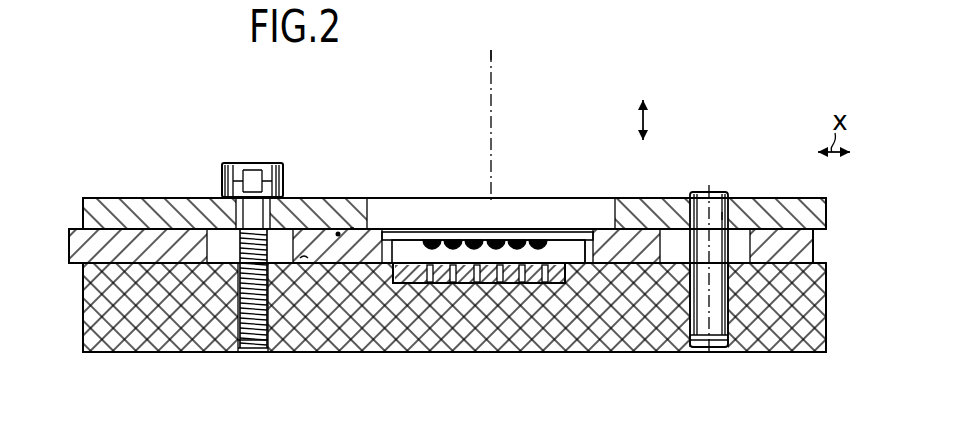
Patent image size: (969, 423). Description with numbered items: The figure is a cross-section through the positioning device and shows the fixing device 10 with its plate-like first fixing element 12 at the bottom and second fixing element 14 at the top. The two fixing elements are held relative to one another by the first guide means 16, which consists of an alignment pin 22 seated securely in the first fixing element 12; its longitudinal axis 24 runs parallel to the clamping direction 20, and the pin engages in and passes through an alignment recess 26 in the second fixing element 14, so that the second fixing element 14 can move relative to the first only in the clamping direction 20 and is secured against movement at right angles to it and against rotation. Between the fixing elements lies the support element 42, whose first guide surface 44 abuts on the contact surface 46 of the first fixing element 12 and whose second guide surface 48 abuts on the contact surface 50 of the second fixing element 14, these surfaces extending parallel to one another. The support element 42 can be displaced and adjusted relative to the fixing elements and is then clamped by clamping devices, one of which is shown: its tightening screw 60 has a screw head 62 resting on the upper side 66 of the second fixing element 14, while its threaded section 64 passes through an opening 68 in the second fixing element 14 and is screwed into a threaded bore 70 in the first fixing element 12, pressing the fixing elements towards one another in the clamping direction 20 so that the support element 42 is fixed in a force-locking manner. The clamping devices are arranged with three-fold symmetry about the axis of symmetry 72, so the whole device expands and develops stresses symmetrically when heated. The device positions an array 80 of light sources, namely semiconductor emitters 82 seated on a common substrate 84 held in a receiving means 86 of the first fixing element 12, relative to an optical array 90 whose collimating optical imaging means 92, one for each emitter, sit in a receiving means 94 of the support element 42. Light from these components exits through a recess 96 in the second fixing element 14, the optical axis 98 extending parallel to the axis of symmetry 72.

The fixing device 10 is at (837, 302).
The first fixing element 12 is at (783, 353).
The second fixing element 14 is at (777, 197).
The first guide means 16 is at (729, 190).
The clamping direction 20 is at (646, 118).
The alignment pin 22 is at (705, 341).
The longitudinal axis 24 is at (690, 300).
The alignment recess 26 is at (724, 216).
The support element 42 is at (105, 245).
The first guide surface 44 is at (345, 263).
The contact surface 46 is at (304, 258).
The second guide surface 48 is at (338, 232).
The contact surface 50 is at (350, 228).
The tightening screw 60 is at (280, 242).
The screw head 62 is at (250, 178).
The threaded section 64 is at (240, 307).
The upper side 66 is at (88, 198).
The opening 68 is at (240, 212).
The threaded bore 70 is at (247, 352).
The axis of symmetry 72 is at (491, 66).
The array of light sources 80 is at (460, 286).
The semiconductor emitter 82 is at (433, 285).
The common substrate 84 is at (508, 285).
The receiving means 86 is at (560, 285).
The optical array 90 is at (532, 228).
The optical imaging means 92 is at (438, 240).
The receiving means 94 is at (567, 232).
The recess 96 is at (368, 229).
The optical axis 98 is at (491, 147).